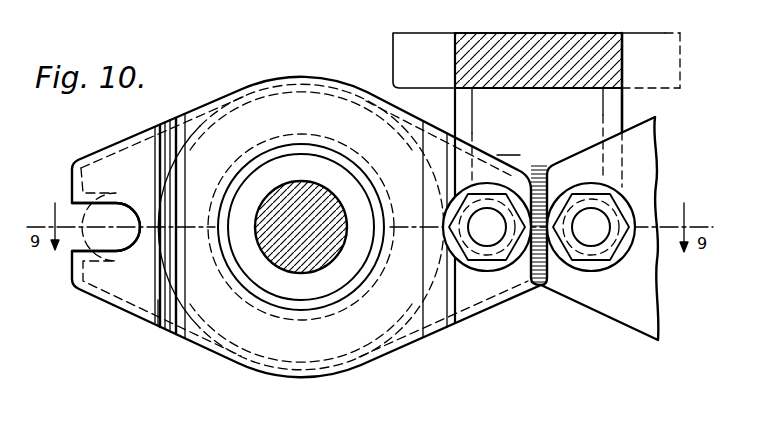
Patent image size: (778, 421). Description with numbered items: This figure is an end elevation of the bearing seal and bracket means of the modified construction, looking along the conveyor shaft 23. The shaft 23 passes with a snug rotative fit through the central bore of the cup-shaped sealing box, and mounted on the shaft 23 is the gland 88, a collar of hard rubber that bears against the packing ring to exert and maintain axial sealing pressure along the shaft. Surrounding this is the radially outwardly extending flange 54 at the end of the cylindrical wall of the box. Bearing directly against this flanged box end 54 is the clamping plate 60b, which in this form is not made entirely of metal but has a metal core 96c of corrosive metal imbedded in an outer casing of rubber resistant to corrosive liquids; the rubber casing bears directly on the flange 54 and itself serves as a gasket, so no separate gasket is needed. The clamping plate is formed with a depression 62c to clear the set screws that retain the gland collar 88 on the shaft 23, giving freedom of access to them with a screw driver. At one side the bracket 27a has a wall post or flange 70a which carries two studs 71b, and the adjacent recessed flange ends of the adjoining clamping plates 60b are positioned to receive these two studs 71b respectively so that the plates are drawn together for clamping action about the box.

The conveyor shaft 23 is at (307, 188).
The bracket 27a is at (546, 30).
The flange 54 is at (195, 330).
The clamping plate 60b is at (128, 319).
The depression 62c is at (172, 190).
The wall post 70a is at (596, 109).
The studs 71b is at (585, 240).
The gland 88 is at (243, 262).
The metal core 96c is at (100, 292).